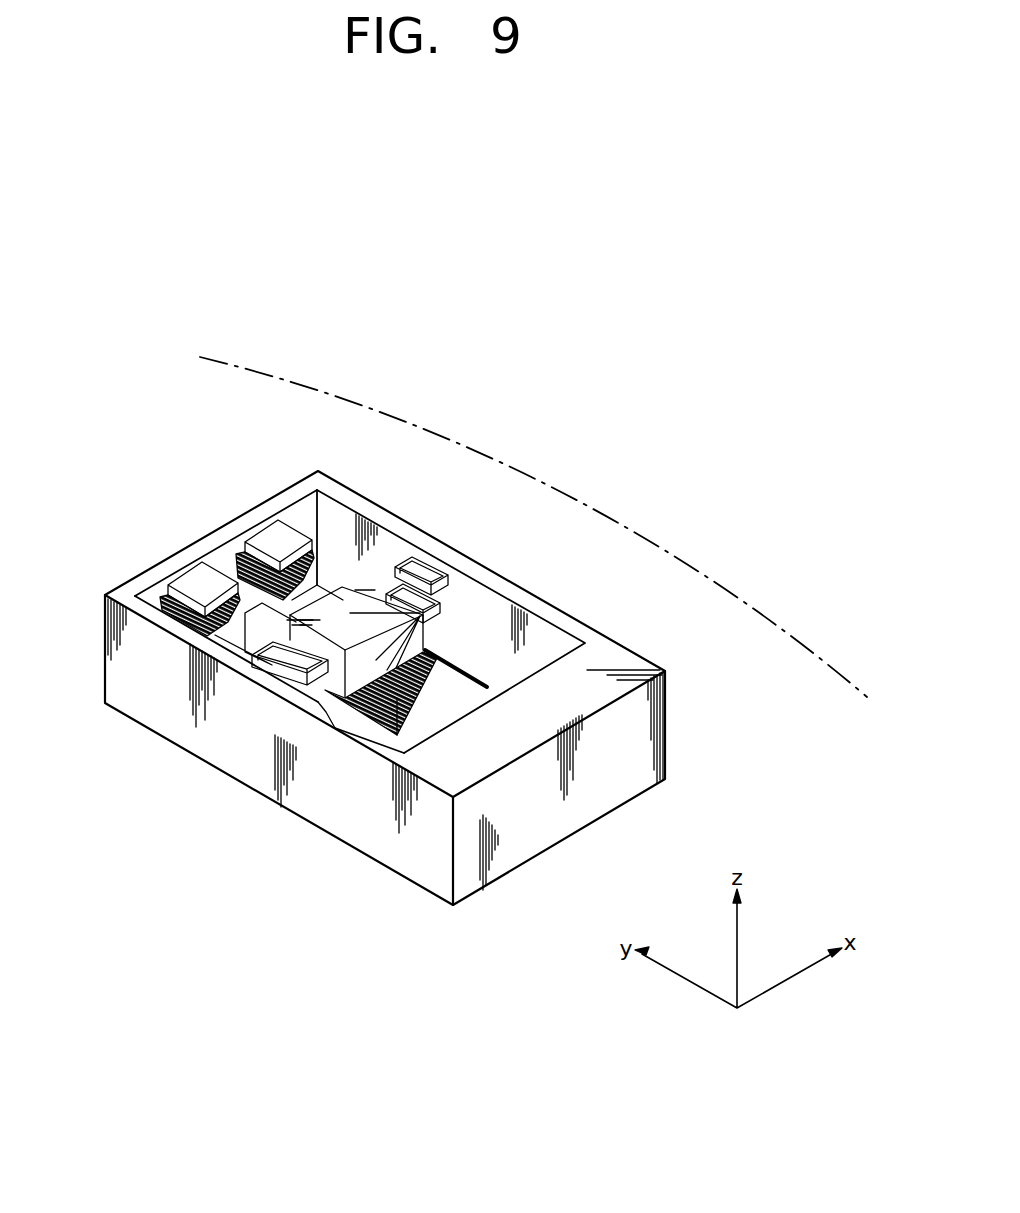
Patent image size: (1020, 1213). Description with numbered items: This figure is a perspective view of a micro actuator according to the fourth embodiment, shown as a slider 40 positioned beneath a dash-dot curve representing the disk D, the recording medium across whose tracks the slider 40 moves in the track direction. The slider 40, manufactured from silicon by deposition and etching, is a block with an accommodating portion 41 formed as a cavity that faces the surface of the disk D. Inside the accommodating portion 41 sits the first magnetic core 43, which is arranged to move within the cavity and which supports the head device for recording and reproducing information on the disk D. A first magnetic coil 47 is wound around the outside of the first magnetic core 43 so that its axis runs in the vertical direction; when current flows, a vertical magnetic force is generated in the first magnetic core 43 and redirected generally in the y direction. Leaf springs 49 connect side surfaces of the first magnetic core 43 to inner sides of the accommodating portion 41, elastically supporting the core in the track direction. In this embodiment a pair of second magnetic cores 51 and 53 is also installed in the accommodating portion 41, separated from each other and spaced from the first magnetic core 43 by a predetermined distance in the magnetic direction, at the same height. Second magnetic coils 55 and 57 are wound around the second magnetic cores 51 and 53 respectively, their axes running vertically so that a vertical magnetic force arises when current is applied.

The slider 40 is at (665, 779).
The accommodating portion 41 is at (552, 640).
The first magnetic core 43 is at (350, 592).
The first magnetic coil 47 is at (318, 702).
The leaf springs 49 is at (418, 553).
The second magnetic core 51 is at (198, 575).
The second magnetic core 53 is at (287, 530).
The second magnetic coil 55 is at (158, 598).
The second magnetic coil 57 is at (232, 555).
The disk D is at (622, 522).